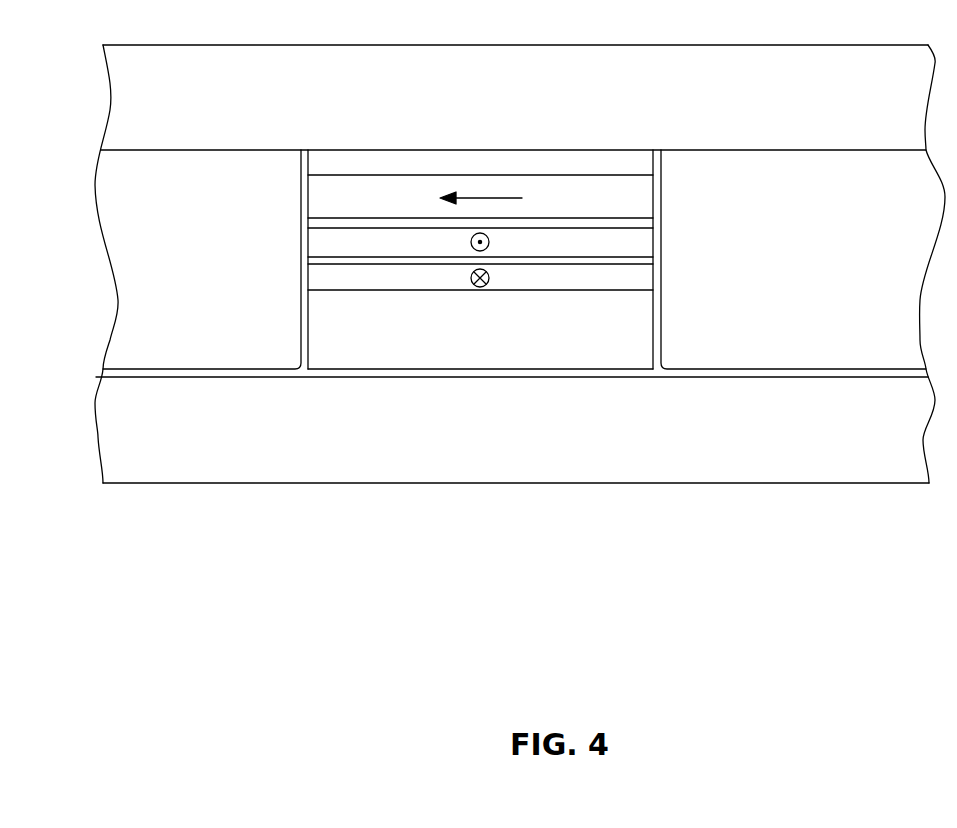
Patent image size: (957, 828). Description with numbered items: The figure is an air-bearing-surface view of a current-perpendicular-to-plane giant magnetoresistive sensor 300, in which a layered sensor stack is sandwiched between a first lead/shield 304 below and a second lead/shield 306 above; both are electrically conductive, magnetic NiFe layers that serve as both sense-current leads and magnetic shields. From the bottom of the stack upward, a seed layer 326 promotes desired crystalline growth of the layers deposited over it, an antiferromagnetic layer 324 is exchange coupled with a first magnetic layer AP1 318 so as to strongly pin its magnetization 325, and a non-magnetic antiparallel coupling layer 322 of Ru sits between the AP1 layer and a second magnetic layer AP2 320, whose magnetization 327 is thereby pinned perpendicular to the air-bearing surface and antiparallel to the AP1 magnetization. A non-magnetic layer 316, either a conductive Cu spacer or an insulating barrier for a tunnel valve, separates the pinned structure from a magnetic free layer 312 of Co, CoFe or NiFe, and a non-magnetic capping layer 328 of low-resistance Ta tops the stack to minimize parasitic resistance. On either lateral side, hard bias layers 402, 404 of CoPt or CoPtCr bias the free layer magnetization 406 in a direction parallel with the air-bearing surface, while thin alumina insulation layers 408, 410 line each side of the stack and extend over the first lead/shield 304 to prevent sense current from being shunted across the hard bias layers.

The CPP giant magnetoresistive sensor 300 is at (526, 28).
The first lead/shield 304 is at (545, 426).
The second lead/shield 306 is at (550, 97).
The magnetic free layer 312 is at (403, 198).
The non-magnetic layer 316 is at (648, 225).
The first magnetic layer AP1 318 is at (410, 276).
The second magnetic layer AP2 320 is at (410, 242).
The antiparallel coupling layer 322 is at (648, 258).
The antiferromagnetic layer 324 is at (528, 328).
The magnetization of AP1 layer 325 is at (490, 277).
The seed layer 326 is at (550, 372).
The magnetization of AP2 layer 327 is at (490, 241).
The non-magnetic capping layer 328 is at (530, 162).
The hard bias layer 402 is at (846, 224).
The hard bias layer 404 is at (222, 236).
The magnetization of free layer 406 is at (502, 198).
The insulation layer 408 is at (660, 364).
The insulation layer 410 is at (294, 368).